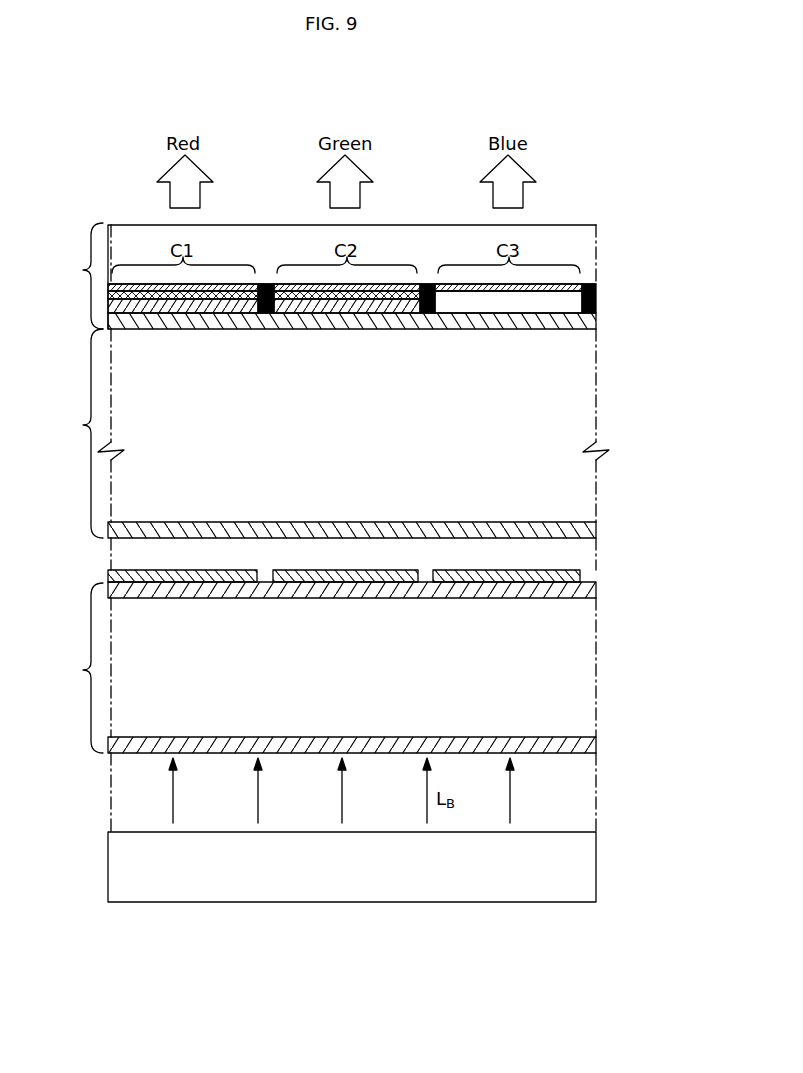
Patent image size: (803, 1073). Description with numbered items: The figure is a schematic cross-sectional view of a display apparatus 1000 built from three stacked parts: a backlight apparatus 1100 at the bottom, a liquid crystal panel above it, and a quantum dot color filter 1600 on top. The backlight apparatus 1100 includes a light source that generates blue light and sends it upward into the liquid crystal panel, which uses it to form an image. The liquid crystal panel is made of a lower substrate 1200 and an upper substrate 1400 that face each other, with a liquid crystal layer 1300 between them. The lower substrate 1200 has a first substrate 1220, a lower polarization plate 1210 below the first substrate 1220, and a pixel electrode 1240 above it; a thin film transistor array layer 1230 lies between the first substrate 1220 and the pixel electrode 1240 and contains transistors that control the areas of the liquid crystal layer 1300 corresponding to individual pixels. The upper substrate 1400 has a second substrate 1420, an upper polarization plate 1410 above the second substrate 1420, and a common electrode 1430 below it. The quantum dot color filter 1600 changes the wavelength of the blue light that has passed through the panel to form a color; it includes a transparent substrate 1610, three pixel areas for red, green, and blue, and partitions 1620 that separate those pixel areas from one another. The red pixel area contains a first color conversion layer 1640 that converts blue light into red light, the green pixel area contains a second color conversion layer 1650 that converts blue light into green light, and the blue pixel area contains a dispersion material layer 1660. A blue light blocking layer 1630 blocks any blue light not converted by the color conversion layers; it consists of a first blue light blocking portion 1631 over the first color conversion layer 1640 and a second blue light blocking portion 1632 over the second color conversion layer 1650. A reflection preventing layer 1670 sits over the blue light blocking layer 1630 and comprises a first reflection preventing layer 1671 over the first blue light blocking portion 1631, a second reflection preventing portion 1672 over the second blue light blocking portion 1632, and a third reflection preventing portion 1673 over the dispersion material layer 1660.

The display apparatus 1000 is at (648, 149).
The backlight apparatus 1100 is at (586, 862).
The lower substrate 1200 is at (66, 668).
The lower polarization plate 1210 is at (586, 742).
The first substrate 1220 is at (586, 675).
The thin film transistor (TFT) array layer 1230 is at (586, 597).
The pixel electrode 1240 is at (583, 575).
The liquid crystal layer 1300 is at (586, 551).
The upper substrate 1400 is at (66, 433).
The upper polarization plate 1410 is at (586, 321).
The second substrate 1420 is at (586, 403).
The common electrode 1430 is at (586, 530).
The quantum dot color filter 1600 is at (66, 276).
The transparent substrate 1610 is at (586, 247).
The partitions 1620 is at (586, 298).
The blue light blocking layer 1630 is at (152, 288).
The first blue light blocking portion 1631 is at (175, 297).
The second blue light blocking portion 1632 is at (344, 297).
The first color conversion layer 1640 is at (216, 306).
The second color conversion layer 1650 is at (386, 306).
The dispersion material layer 1660 is at (534, 302).
The reflection preventing layer 1670 is at (552, 286).
The first reflection preventing layer 1671 is at (133, 290).
The second reflection preventing portion 1672 is at (302, 290).
The third reflection preventing portion 1673 is at (464, 290).